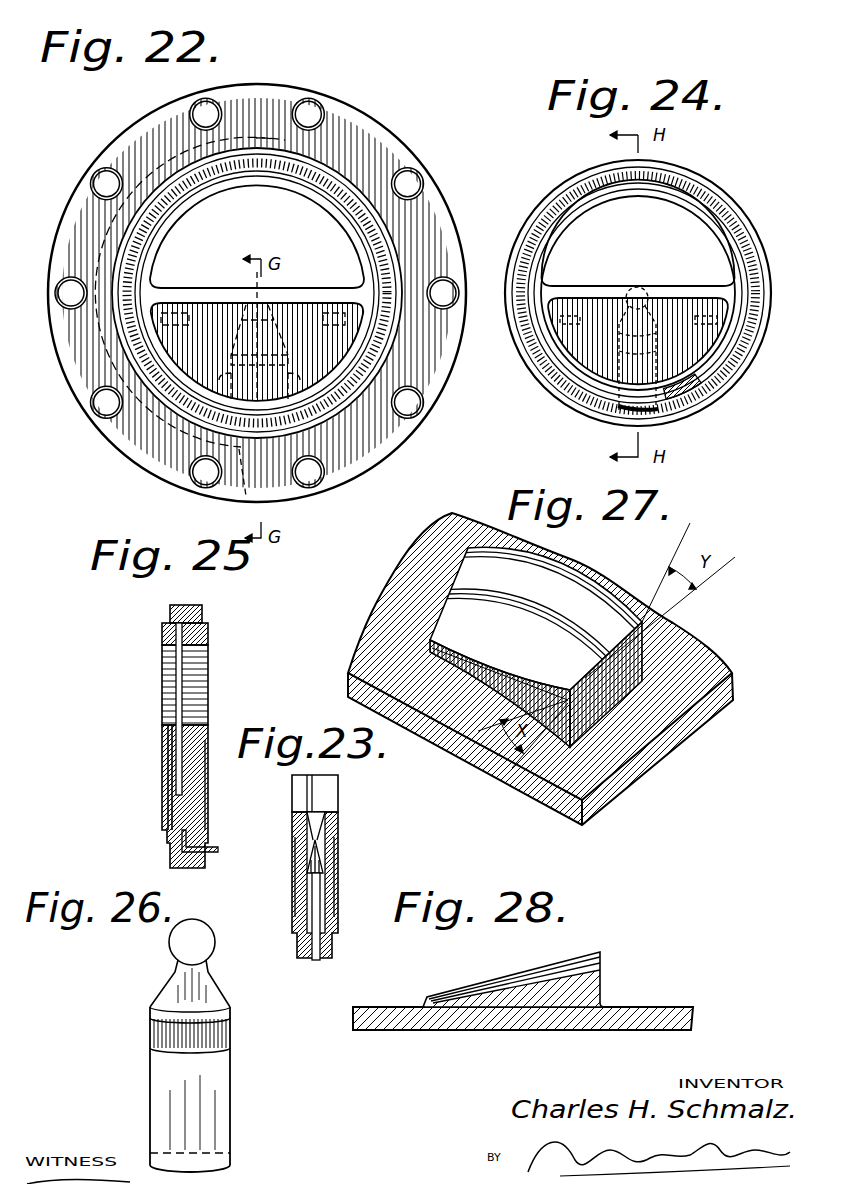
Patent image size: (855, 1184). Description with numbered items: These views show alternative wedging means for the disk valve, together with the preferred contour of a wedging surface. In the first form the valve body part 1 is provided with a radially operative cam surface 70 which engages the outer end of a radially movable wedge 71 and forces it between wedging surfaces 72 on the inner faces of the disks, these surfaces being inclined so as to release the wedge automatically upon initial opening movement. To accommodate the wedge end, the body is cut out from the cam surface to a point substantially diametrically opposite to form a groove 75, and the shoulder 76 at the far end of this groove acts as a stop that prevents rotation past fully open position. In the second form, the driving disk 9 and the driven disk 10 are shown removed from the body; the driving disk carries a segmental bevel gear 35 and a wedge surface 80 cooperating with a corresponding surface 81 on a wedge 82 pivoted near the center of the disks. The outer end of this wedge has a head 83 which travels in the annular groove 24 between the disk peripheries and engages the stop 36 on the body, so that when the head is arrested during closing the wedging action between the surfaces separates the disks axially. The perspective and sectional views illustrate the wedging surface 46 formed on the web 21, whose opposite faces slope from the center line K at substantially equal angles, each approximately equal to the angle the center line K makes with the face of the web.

In FIG. 22, the body part 1 is at (380, 462).
In FIG. 24, the driving disk 9 is at (748, 362).
In FIG. 25, the driving disk 9 is at (162, 740).
In FIG. 23, the driving disk 9 is at (302, 944).
In FIG. 24, the driven disk 10 is at (730, 328).
In FIG. 25, the driven disk 10 is at (208, 745).
In FIG. 23, the driven disk 10 is at (338, 820).
In FIG. 27, the web 21 is at (540, 669).
In FIG. 28, the web 21 is at (645, 1007).
In FIG. 24, the annular groove 24 is at (543, 357).
In FIG. 25, the segmental bevel gear 35 is at (170, 612).
In FIG. 24, the stop 36 is at (680, 406).
In FIG. 27, the wedging surface 46 is at (572, 615).
In FIG. 22, the cam surface 70 is at (246, 497).
In FIG. 22, the wedge 71 is at (294, 352).
In FIG. 23, the wedge 71 is at (316, 898).
In FIG. 23, the wedging surfaces 72 is at (328, 860).
In FIG. 22, the groove 75 is at (103, 312).
In FIG. 22, the shoulder 76 is at (271, 140).
In FIG. 25, the wedge surface 80 is at (185, 792).
In FIG. 26, the wedge surface 81 is at (195, 1037).
In FIG. 25, the wedge 82 is at (175, 808).
In FIG. 26, the wedge 82 is at (232, 1084).
In FIG. 24, the head 83 is at (627, 413).
In FIG. 25, the head 83 is at (218, 850).
In FIG. 26, the head 83 is at (215, 1156).
In FIG. 27, the center line K is at (522, 642).
In FIG. 28, the center line K is at (425, 1000).